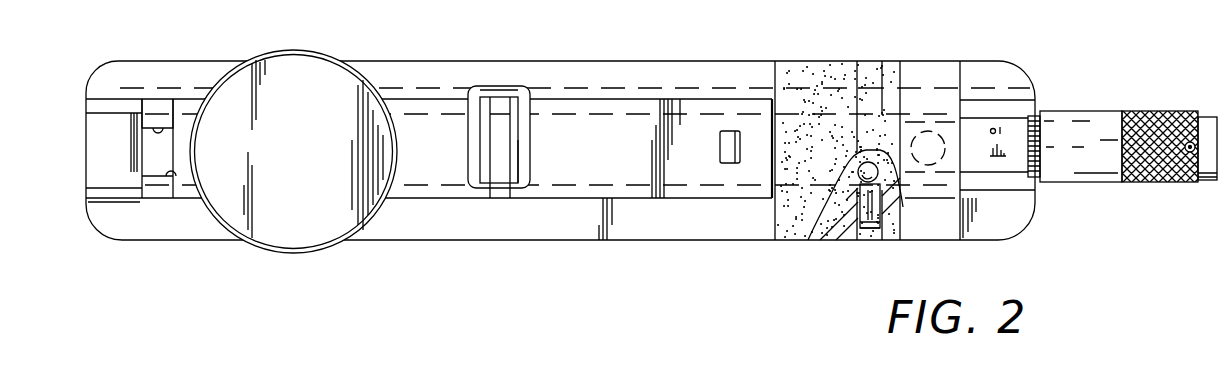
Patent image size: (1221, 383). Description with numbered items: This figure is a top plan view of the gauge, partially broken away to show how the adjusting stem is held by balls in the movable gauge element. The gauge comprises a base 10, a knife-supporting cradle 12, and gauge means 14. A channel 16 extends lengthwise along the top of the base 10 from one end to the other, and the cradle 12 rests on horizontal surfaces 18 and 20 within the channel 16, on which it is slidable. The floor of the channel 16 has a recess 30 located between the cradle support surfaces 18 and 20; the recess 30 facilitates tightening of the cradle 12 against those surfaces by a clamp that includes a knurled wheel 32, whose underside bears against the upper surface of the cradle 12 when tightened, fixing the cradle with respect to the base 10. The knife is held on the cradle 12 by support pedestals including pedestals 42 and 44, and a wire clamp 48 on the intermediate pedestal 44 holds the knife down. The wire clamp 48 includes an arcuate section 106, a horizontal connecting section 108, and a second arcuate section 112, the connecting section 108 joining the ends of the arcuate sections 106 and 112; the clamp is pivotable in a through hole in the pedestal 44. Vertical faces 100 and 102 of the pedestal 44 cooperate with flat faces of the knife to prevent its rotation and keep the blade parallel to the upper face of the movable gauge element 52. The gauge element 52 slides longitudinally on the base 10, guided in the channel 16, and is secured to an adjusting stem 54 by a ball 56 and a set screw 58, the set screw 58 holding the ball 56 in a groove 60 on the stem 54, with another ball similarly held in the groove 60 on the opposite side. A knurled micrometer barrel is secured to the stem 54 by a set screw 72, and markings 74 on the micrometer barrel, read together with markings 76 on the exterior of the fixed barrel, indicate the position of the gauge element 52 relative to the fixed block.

The base 10 is at (660, 240).
The knife-supporting cradle 12 is at (584, 204).
The gauge means 14 is at (910, 58).
The channel 16 is at (98, 146).
The horizontal surface 18 is at (121, 105).
The horizontal surface 20 is at (118, 200).
The recess 30 is at (100, 174).
The knurled wheel 32 is at (318, 54).
The support pedestal 42 is at (157, 202).
The support pedestal 44 is at (500, 200).
The wire clamp 48 is at (534, 144).
The movable gauge element 52 is at (820, 61).
The adjusting stem 54 is at (895, 160).
The ball 56 is at (840, 195).
The set screw 58 is at (858, 226).
The groove 60 is at (882, 178).
The set screw 72 is at (1180, 110).
The markings 74 is at (1032, 123).
The markings 76 is at (1008, 157).
The vertical face 100 is at (158, 124).
The vertical face 102 is at (176, 176).
The arcuate section 106 is at (470, 146).
The horizontal connecting section 108 is at (500, 90).
The second arcuate section 112 is at (526, 160).